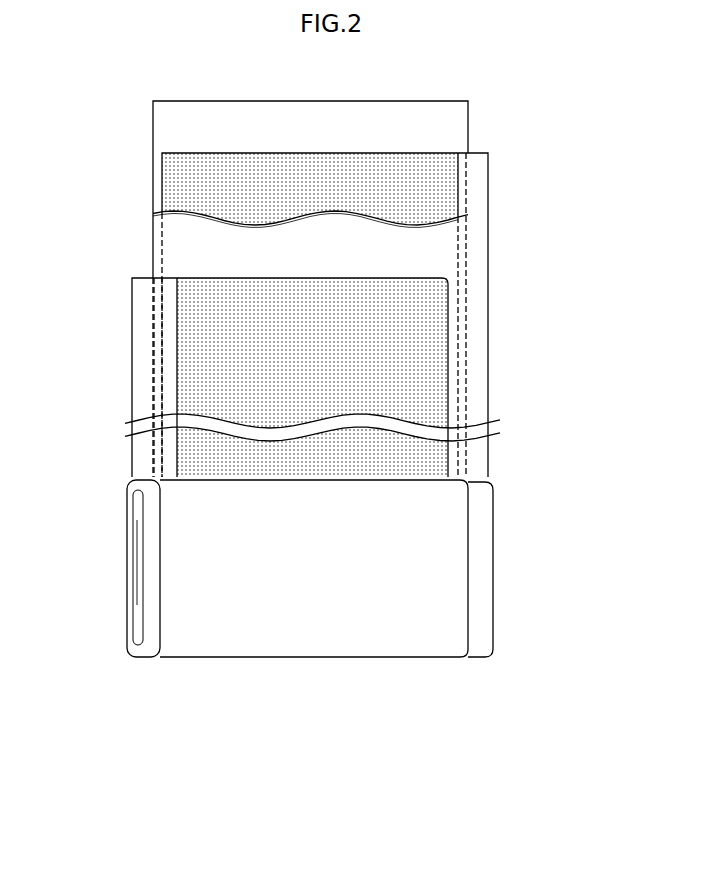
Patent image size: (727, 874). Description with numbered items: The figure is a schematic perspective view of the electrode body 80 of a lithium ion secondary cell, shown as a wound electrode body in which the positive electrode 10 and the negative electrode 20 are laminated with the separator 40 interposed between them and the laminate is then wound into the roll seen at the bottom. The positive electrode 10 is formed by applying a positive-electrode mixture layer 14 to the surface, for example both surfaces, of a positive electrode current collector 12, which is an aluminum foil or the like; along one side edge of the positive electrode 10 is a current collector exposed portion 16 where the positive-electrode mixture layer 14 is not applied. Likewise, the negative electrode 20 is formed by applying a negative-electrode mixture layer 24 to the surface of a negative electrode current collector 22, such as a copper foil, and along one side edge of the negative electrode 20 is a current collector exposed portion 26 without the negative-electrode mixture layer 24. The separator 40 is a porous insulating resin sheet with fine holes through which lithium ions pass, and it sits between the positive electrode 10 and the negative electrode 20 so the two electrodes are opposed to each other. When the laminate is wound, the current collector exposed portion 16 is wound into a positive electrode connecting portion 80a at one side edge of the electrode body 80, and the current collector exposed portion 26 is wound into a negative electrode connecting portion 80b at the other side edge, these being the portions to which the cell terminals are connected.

The positive electrode 10 is at (238, 377).
The positive electrode current collector 12 is at (132, 410).
The positive-electrode mixture layer 14 is at (190, 297).
The current collector exposed portion 16 is at (148, 381).
The negative electrode 20 is at (372, 312).
The negative electrode current collector 22 is at (490, 323).
The negative-electrode mixture layer 24 is at (457, 180).
The current collector exposed portion 26 is at (477, 295).
The separator 40 is at (172, 123).
The electrode body 80 is at (313, 604).
The positive electrode connecting portion 80a is at (145, 657).
The negative electrode connecting portion 80b is at (485, 656).